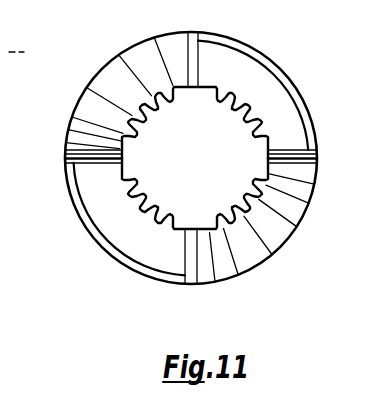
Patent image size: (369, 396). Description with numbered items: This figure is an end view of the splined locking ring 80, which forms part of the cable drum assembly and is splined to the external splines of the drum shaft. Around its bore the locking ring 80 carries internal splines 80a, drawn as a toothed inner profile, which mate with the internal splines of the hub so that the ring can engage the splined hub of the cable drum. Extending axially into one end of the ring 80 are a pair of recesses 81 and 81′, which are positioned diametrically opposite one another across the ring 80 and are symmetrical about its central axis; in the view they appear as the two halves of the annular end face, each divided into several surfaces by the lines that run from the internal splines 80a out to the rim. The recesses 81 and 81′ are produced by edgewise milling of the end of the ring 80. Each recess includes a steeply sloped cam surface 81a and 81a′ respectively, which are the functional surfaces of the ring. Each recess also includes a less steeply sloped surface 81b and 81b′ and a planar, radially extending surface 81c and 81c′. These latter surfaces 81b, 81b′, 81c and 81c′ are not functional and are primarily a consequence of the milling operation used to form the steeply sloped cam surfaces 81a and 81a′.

The splined locking ring 80 is at (272, 59).
The internal splines 80a is at (205, 229).
The recess 81 is at (301, 228).
The steeply sloped cam surface 81a is at (297, 160).
The less steeply sloped surface 81b is at (255, 259).
The planar radially extending surface 81c is at (200, 260).
The recess 81′ is at (112, 58).
The steeply sloped cam surface 81a′ is at (75, 134).
The less steeply sloped surface 81b′ is at (97, 105).
The planar radially extending surface 81c′ is at (188, 46).